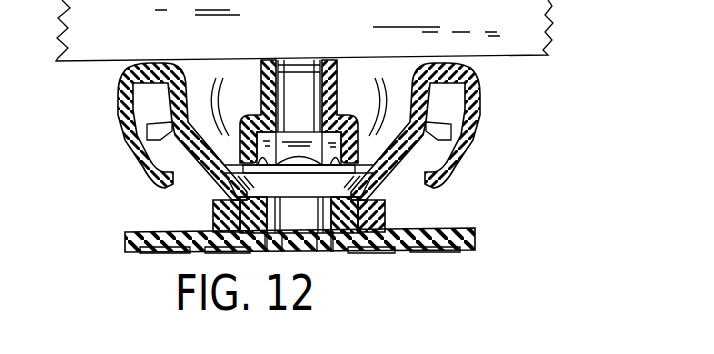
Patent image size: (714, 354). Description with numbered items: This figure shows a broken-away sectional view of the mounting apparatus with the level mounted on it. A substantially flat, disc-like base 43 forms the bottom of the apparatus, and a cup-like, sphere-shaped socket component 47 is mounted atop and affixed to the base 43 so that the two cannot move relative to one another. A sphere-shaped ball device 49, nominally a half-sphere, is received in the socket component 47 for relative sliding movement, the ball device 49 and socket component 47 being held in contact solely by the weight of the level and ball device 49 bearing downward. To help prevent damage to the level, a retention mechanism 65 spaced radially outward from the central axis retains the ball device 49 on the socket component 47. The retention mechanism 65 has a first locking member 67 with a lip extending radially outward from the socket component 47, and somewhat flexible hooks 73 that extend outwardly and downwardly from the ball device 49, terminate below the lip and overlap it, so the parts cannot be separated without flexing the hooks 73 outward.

The base 43 is at (477, 241).
The socket component 47 is at (200, 193).
The ball device 49 is at (480, 96).
The retention mechanism 65 is at (527, 140).
The first locking member 67 is at (130, 137).
The hook 73 is at (437, 186).